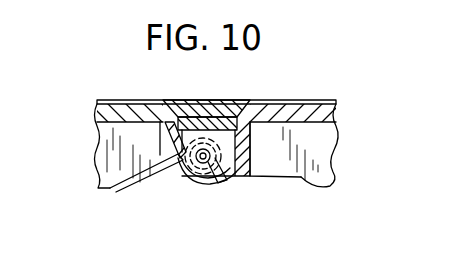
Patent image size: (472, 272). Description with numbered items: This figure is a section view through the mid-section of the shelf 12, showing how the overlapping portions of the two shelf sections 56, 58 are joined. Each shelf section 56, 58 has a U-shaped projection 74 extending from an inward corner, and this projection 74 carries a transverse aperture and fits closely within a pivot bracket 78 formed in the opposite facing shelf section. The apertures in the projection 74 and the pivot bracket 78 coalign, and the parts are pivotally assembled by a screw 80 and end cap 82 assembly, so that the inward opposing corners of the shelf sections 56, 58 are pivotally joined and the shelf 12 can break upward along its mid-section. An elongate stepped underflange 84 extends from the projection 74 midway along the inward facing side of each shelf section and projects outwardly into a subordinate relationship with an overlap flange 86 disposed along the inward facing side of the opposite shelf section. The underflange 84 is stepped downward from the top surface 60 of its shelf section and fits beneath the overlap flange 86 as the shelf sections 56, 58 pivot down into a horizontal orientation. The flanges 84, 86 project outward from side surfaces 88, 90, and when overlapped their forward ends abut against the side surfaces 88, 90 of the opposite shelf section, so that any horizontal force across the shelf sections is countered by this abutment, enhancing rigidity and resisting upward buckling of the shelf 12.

The shelf 12 is at (299, 89).
The shelf section 56 is at (294, 178).
The shelf section 58 is at (104, 193).
The top surface 60 is at (106, 100).
The U-shaped projection 74 is at (208, 186).
The pivot bracket 78 is at (185, 175).
The screw 80 is at (233, 173).
The end cap 82 is at (219, 186).
The stepped underflange 84 is at (209, 100).
The overlap flange 86 is at (197, 100).
The side surface 88 is at (235, 100).
The side surface 90 is at (178, 160).